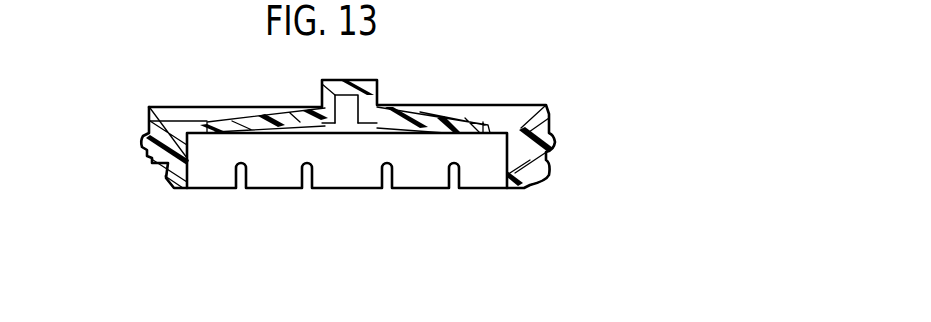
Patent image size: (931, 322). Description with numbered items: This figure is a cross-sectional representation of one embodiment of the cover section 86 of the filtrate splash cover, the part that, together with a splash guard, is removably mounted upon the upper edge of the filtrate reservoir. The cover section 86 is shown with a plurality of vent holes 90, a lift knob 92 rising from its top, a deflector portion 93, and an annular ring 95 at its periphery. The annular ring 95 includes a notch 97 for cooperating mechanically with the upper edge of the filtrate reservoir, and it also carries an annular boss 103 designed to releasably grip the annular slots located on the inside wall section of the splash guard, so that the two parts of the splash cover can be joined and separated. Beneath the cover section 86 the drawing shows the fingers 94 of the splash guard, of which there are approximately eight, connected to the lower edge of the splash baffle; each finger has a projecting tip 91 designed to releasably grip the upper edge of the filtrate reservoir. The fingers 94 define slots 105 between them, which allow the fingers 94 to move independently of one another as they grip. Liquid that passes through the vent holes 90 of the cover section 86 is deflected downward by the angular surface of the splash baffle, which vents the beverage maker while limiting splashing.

The cover section 86 is at (185, 77).
The vent holes 90 is at (180, 123).
The projecting tips 91 is at (167, 173).
The lift knob 92 is at (375, 82).
The deflector portion 93 is at (443, 108).
The fingers 94 is at (212, 188).
The annular ring 95 is at (556, 140).
The notch 97 is at (551, 166).
The annular boss 103 is at (143, 143).
The slots 105 is at (387, 183).